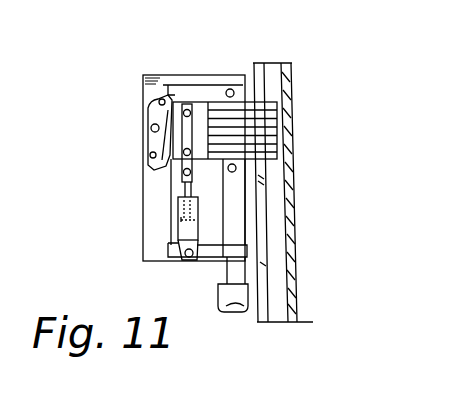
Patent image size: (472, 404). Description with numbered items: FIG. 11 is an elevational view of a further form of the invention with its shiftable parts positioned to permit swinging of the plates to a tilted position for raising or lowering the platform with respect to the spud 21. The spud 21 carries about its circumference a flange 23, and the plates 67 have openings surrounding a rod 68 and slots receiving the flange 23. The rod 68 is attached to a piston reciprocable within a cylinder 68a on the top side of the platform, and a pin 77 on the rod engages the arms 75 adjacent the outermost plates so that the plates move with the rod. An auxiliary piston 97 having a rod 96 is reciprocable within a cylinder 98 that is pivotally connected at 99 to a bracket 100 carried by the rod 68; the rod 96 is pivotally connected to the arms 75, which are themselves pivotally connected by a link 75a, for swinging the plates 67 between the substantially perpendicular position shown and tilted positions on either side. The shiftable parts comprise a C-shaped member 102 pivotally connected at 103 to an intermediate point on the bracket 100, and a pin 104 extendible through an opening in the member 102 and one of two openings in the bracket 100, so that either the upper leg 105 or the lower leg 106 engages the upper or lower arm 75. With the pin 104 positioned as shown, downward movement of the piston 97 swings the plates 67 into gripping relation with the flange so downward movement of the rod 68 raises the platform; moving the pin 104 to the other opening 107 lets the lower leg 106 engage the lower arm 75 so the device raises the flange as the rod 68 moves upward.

The bracket 100 is at (143, 89).
The C-shaped member 102 is at (156, 106).
The pivotal connection 103 is at (181, 137).
The pin 104 is at (163, 90).
The upper leg 105 is at (175, 100).
The lower leg 106 is at (152, 173).
The other opening 107 is at (182, 170).
The rod 96 is at (177, 200).
The auxiliary piston 97 is at (140, 231).
The cylinder 98 is at (168, 246).
The pivotal connection 99 is at (182, 258).
The arms 75 is at (252, 62).
The link 75a is at (153, 133).
The spud 21 is at (292, 92).
The plates 67 is at (282, 130).
The pin 77 is at (266, 163).
The rod 68 is at (246, 203).
The cylinder 68a is at (248, 292).
The flange 23 is at (283, 239).